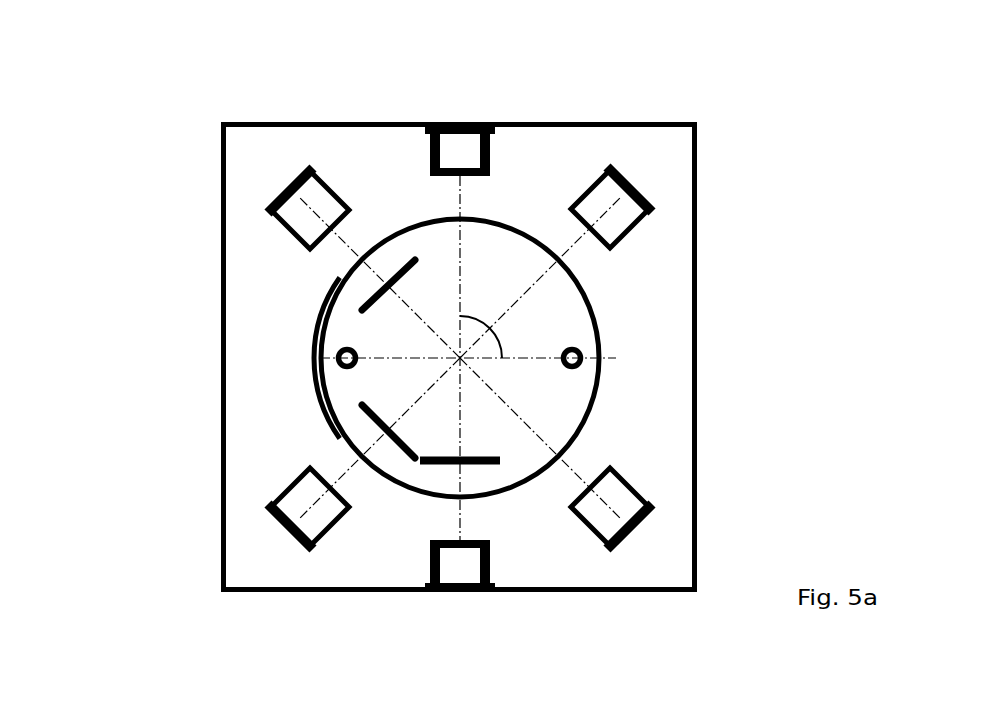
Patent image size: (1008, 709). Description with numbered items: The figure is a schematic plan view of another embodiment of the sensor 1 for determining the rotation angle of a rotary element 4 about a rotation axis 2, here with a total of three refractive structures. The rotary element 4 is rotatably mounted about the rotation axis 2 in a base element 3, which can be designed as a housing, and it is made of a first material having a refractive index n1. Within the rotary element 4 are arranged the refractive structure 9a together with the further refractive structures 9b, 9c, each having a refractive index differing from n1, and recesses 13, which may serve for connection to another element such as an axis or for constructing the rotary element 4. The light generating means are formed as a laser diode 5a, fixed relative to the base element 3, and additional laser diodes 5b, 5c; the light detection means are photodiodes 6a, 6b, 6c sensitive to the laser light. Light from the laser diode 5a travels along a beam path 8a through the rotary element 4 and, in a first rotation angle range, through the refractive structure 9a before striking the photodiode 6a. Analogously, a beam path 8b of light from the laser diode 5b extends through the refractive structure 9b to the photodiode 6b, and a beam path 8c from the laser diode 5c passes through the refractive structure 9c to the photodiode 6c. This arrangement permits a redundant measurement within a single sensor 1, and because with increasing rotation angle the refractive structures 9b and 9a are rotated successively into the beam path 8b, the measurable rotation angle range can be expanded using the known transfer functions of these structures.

The sensor 1 is at (188, 140).
The rotation axis 2 is at (338, 290).
The base element 3 is at (362, 133).
The rotary element 4 is at (322, 388).
The laser diode 5a is at (458, 146).
The laser diode 5b is at (607, 218).
The laser diode 5c is at (310, 211).
The photodiode 6a is at (458, 562).
The photodiode 6b is at (310, 500).
The photodiode 6c is at (612, 508).
The beam path 8a is at (460, 358).
The beam path 8b is at (345, 472).
The beam path 8c is at (520, 428).
The refractive structure 9a is at (503, 466).
The refractive structure 9b is at (425, 390).
The refractive structure 9c is at (400, 265).
The recesses 13 is at (582, 360).